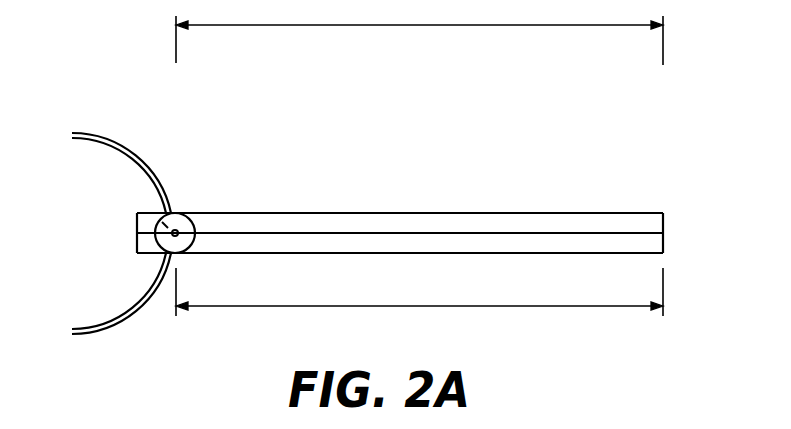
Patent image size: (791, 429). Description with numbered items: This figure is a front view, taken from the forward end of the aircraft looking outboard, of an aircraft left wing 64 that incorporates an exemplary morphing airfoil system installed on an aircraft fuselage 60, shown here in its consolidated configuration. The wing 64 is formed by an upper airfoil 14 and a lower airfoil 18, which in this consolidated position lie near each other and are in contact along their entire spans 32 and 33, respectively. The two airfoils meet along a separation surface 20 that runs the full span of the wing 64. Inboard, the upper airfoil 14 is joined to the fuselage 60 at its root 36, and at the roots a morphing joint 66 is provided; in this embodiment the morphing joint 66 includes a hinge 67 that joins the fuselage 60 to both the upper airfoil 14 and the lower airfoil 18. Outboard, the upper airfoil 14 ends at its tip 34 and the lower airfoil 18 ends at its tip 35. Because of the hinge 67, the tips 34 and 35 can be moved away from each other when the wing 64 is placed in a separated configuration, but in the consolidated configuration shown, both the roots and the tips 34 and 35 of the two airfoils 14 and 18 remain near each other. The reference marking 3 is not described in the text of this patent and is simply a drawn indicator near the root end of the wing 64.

The reference line 3 is at (176, 335).
The upper airfoil 14 is at (420, 213).
The lower airfoil 18 is at (420, 254).
The separation surface 20 is at (664, 228).
The span of the upper airfoil 32 is at (420, 25).
The span of the lower airfoil 33 is at (420, 306).
The tip of the upper airfoil 34 is at (657, 181).
The tip of the lower airfoil 35 is at (675, 262).
The root of the upper airfoil 36 is at (178, 124).
The aircraft fuselage 60 is at (108, 132).
The aircraft left wing 64 is at (342, 110).
The morphing joint 66 is at (181, 182).
The hinge 67 is at (161, 213).